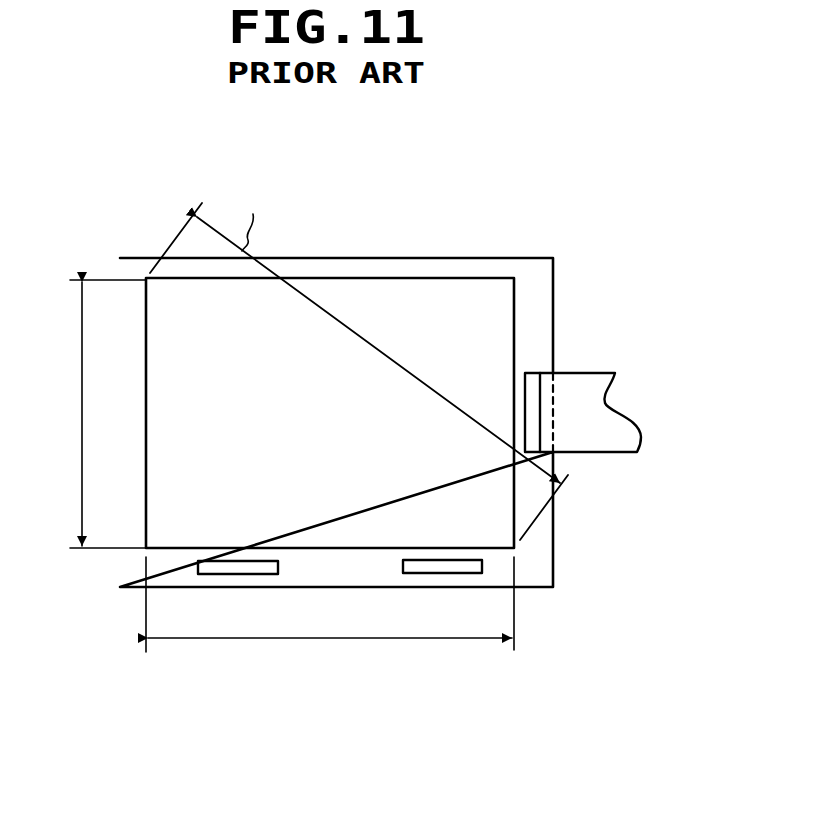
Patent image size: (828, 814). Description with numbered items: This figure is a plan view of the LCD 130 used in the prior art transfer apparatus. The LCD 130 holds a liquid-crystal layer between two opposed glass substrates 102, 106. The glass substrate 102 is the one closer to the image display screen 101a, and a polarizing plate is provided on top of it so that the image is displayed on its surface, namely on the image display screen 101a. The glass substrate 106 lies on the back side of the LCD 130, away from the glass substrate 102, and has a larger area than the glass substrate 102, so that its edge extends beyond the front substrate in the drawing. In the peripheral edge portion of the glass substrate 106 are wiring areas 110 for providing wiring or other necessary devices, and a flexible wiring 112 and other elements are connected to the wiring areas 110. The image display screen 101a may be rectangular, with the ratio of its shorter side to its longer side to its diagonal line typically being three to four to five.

The LCD 130 is at (522, 210).
The glass substrate 106 is at (548, 565).
The image display screen 101a is at (500, 332).
The glass substrate 102 is at (385, 276).
The wiring areas 110 is at (530, 398).
The flexible wiring 112 is at (605, 406).